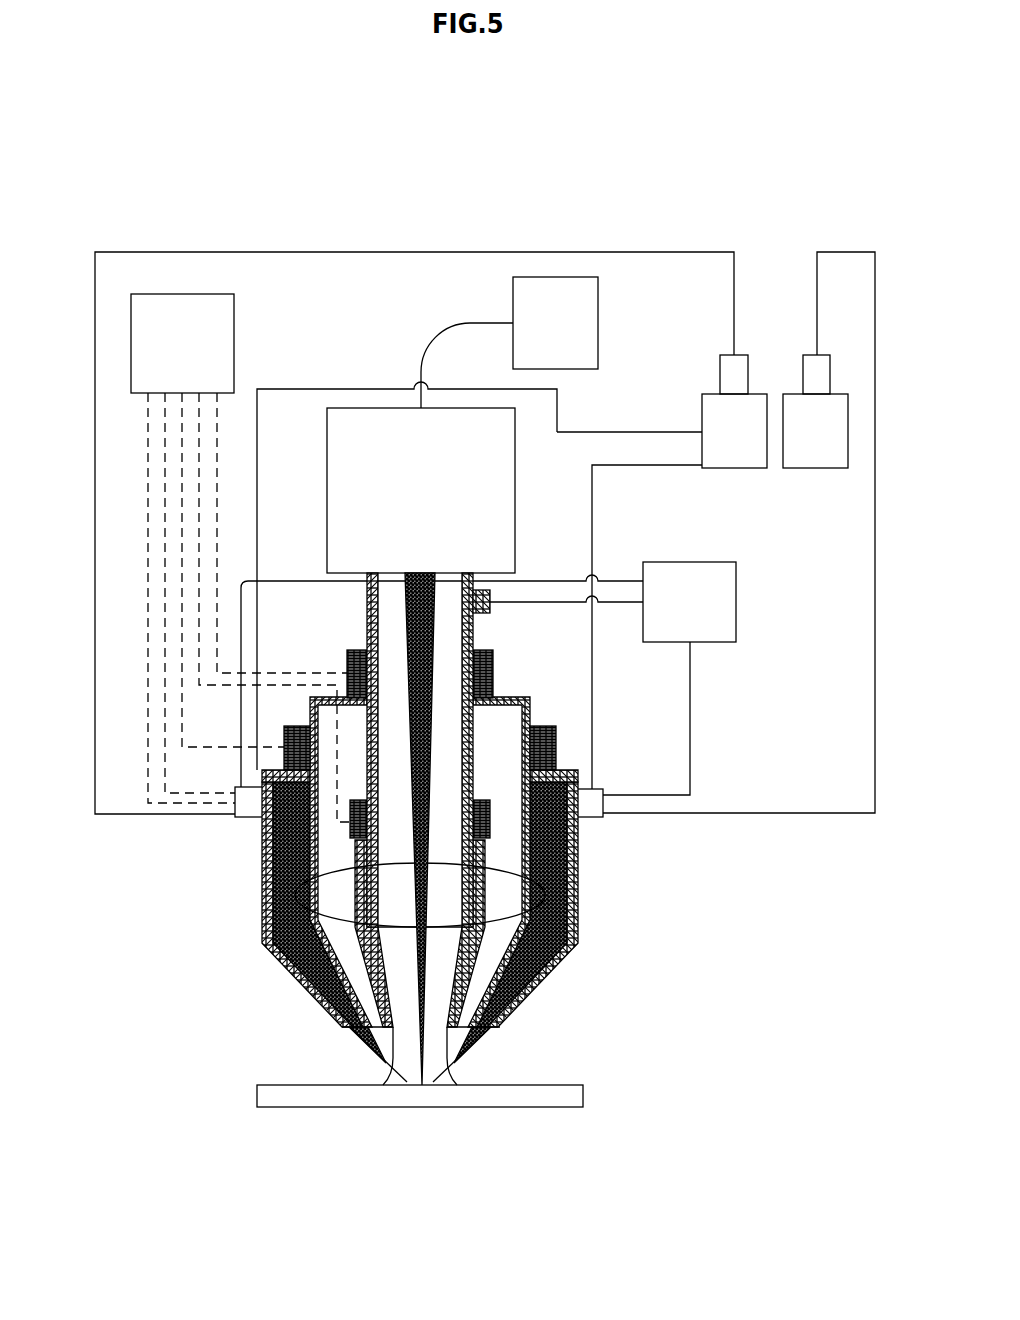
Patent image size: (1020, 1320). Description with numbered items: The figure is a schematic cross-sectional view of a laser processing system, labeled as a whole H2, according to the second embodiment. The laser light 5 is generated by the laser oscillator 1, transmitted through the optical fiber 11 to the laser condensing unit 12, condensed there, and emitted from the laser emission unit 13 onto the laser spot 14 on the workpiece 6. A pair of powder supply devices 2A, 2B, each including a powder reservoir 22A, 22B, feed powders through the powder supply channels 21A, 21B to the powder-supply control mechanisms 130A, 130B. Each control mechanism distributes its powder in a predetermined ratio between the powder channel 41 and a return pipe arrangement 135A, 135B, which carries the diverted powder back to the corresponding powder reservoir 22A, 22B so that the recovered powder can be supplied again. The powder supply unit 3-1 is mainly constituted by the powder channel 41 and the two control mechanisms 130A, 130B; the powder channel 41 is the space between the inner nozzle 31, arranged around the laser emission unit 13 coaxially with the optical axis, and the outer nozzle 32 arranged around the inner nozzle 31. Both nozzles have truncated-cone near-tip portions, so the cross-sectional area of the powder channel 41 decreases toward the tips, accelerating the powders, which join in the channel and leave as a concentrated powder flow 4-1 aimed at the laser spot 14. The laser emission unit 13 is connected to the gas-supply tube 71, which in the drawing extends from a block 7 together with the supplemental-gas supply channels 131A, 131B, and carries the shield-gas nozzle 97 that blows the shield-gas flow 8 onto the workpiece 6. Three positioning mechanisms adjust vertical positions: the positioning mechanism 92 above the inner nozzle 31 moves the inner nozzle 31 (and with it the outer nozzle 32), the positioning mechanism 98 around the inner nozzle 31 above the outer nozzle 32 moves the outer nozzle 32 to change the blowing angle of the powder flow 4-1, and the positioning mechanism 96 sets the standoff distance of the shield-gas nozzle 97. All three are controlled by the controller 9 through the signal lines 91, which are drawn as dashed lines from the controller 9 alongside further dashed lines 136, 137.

The welding head H2 is at (507, 130).
The laser oscillator 1 is at (630, 306).
The optical fiber 11 is at (487, 323).
The laser condensing unit 12 is at (540, 512).
The laser emission unit 13 is at (510, 633).
The laser spot 14 is at (452, 1145).
The powder supply device 2A is at (815, 431).
The powder supply device 2B is at (734, 431).
The powder supply channel 21A is at (620, 505).
The powder supply channel 21B is at (600, 432).
The powder reservoir 22A is at (833, 333).
The powder reservoir 22B is at (755, 333).
The powder supply unit 3-1 is at (700, 865).
The inner nozzle 31 is at (560, 702).
The outer nozzle 32 is at (624, 942).
The powder flow 4-1 is at (503, 1057).
The powder channel 41 is at (243, 945).
The laser light 5 is at (238, 905).
The workpiece 6 is at (278, 1068).
The controller 7 is at (706, 562).
The gas-supply tube 71 is at (565, 603).
The shield-gas flow 8 is at (380, 1072).
The controller 9 is at (262, 325).
The signal lines 91 is at (199, 463).
The positioning mechanism 92 is at (520, 668).
The positioning mechanism 96 is at (498, 768).
The shield-gas nozzle 97 is at (603, 905).
The positioning mechanism 98 is at (600, 742).
The powder-supply control mechanism 130A is at (616, 855).
The powder-supply control mechanism 130B is at (222, 855).
The supplemental-gas supply channel 131A is at (724, 703).
The supplemental-gas supply channel 131B is at (606, 582).
The return pipe arrangement 135A is at (831, 858).
The return pipe arrangement 135B is at (663, 251).
The first gas line 136 is at (165, 510).
The second gas line 137 is at (148, 462).